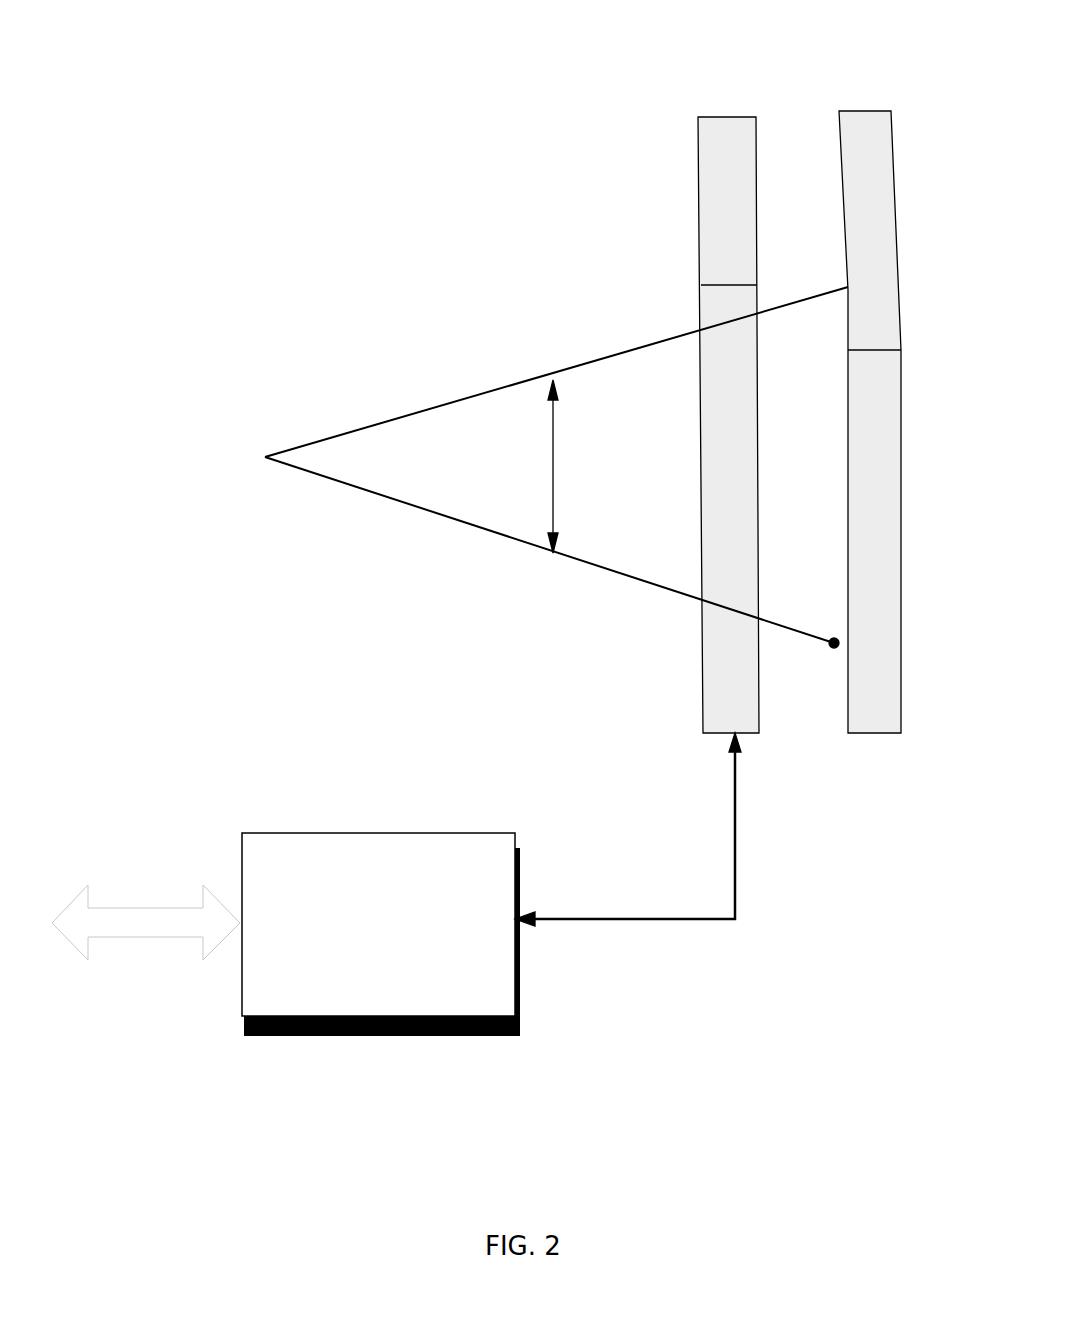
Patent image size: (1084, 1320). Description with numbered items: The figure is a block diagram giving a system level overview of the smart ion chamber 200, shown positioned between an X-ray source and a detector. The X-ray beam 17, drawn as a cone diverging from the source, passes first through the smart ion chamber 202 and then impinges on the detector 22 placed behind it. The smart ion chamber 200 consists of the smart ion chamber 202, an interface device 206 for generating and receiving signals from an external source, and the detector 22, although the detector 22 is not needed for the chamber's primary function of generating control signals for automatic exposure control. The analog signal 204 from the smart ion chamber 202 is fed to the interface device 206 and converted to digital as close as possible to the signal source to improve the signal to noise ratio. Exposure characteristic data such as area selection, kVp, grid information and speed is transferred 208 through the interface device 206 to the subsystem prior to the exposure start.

The smart ion chamber system 200 is at (783, 933).
The smart ion chamber 202 is at (717, 117).
The detector 22 is at (846, 95).
The X-ray beam 17 is at (571, 466).
The analog signal 204 is at (588, 919).
The interface device 206 is at (338, 833).
The exposure information transfer 208 is at (108, 905).